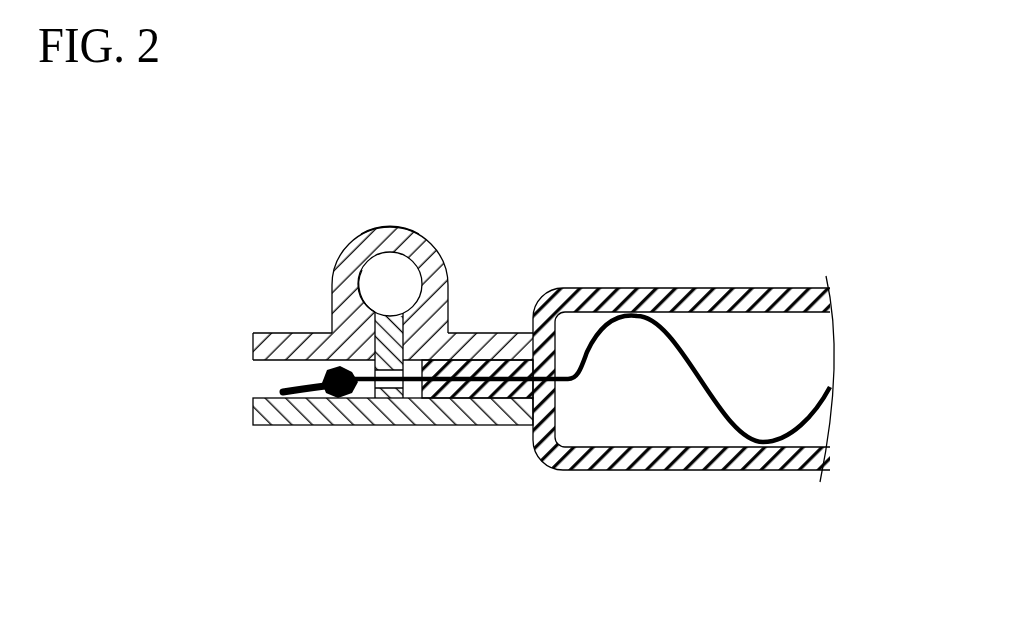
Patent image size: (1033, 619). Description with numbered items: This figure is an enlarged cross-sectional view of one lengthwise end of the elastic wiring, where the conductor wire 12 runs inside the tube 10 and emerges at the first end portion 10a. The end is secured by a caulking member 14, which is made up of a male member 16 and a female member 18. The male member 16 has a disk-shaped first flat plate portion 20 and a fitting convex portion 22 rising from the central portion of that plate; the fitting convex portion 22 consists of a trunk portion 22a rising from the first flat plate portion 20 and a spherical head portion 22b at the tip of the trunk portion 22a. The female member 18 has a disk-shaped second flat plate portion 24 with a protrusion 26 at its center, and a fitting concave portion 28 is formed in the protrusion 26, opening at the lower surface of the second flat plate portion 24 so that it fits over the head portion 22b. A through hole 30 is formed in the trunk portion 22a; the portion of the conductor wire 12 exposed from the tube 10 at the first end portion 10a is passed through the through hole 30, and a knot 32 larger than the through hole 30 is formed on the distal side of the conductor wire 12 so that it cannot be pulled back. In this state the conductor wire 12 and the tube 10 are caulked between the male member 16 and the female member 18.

The tube 10 is at (628, 424).
The first end portion 10a is at (450, 412).
The conductor wire 12 is at (712, 432).
The caulking member 14 is at (355, 329).
The male member 16 is at (378, 459).
The female member 18 is at (410, 229).
The first flat plate portion 20 is at (264, 427).
The fitting convex portion 22 is at (381, 248).
The trunk portion 22a is at (446, 298).
The head portion 22b is at (431, 242).
The second flat plate portion 24 is at (259, 331).
The protrusion 26 is at (373, 229).
The fitting concave portion 28 is at (362, 283).
The through hole 30 is at (388, 400).
The knot 32 is at (326, 374).